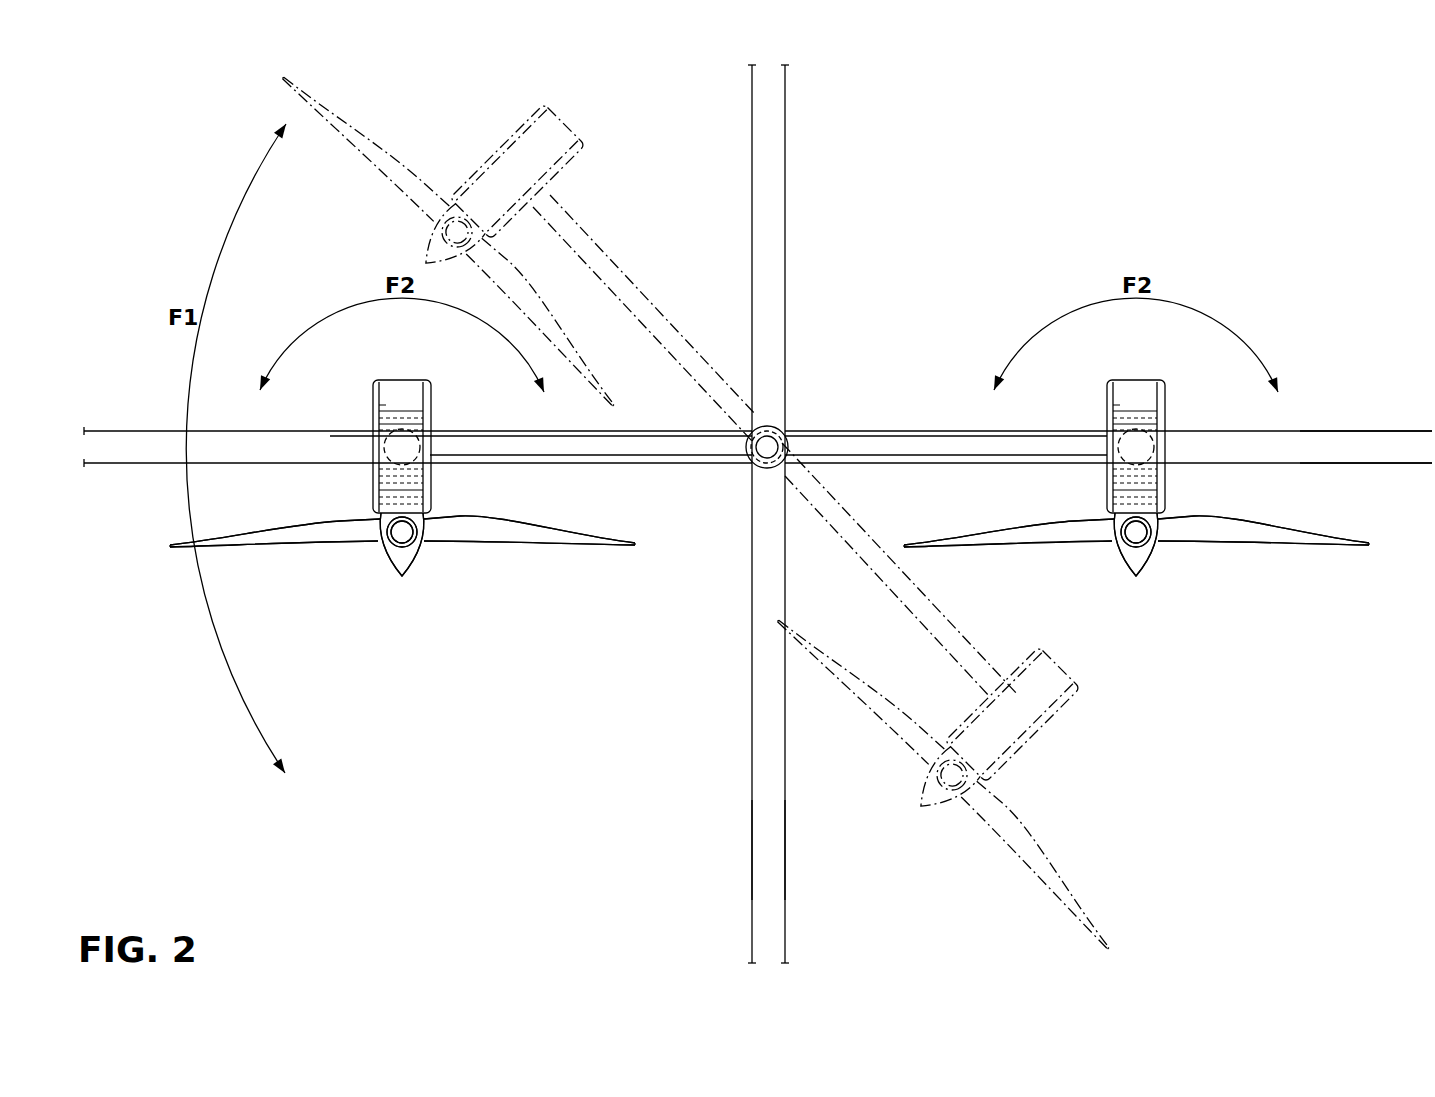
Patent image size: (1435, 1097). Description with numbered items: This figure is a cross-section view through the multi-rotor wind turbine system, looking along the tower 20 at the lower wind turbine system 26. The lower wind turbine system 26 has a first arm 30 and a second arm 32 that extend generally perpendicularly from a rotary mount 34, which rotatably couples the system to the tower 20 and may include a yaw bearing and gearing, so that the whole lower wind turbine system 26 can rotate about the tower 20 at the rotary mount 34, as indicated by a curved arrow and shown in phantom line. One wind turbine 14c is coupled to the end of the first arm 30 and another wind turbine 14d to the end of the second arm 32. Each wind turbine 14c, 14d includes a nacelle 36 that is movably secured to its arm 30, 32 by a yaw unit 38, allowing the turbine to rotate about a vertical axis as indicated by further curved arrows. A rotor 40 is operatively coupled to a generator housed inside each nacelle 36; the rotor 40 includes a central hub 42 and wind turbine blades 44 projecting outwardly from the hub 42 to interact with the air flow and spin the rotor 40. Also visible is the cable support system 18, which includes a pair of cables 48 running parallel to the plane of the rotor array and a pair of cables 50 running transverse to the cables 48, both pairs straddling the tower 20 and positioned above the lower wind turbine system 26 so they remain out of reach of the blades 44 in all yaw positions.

The wind turbine 14c is at (402, 642).
The wind turbine 14d is at (1136, 642).
The cable support system 18 is at (1330, 418).
The tower 20 is at (758, 462).
The lower wind turbine system 26 is at (242, 410).
The first arm 30 is at (503, 431).
The second arm 32 is at (1032, 431).
The rotary mount 34 is at (778, 428).
The nacelle 36 is at (373, 404).
The yaw unit 38 is at (392, 465).
The rotor 40 is at (380, 574).
The central hub 42 is at (420, 568).
The wind turbine blades 44 is at (418, 528).
The cable 48 is at (1365, 430).
The cable 50 is at (750, 841).